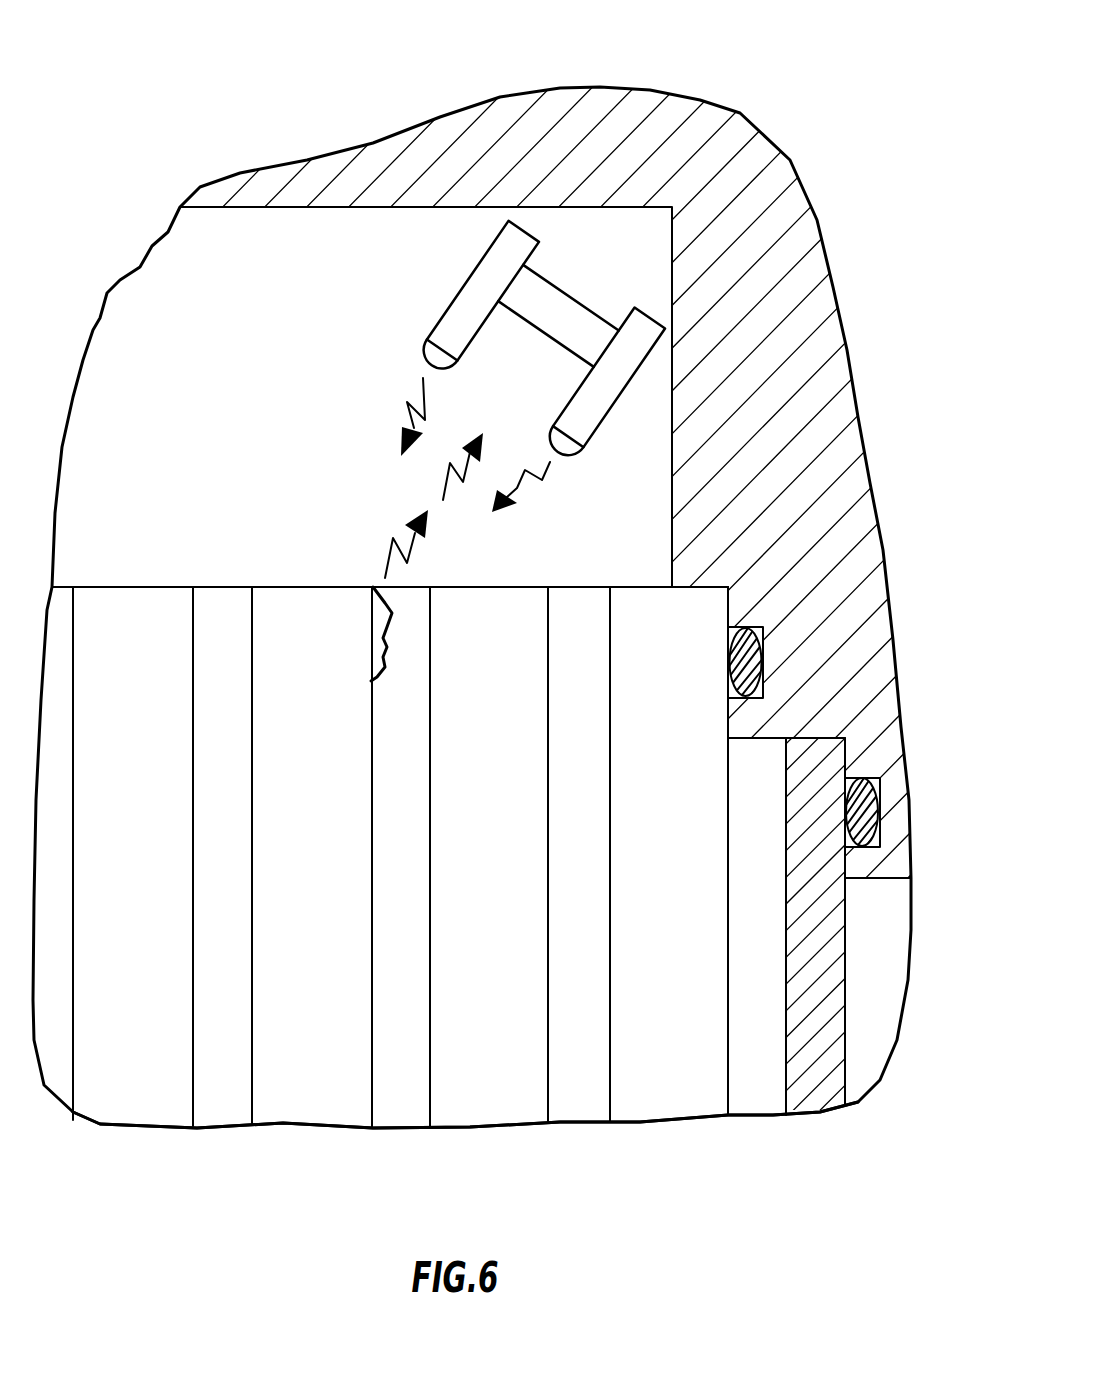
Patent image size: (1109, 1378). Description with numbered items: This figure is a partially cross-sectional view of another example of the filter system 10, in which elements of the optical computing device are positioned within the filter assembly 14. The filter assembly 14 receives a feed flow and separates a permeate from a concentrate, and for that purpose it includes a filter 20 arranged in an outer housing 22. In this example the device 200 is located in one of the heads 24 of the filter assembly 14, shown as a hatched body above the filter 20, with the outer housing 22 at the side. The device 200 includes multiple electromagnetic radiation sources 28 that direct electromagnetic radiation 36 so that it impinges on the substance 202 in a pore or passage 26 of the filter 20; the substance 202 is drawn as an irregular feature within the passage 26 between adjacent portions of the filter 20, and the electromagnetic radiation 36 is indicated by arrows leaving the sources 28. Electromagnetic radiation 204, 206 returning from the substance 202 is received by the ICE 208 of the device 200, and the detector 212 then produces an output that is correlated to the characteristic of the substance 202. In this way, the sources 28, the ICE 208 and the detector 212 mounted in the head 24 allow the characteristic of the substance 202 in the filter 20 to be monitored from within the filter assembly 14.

The filter system 10 is at (822, 65).
The filter assembly 14 is at (375, 1138).
The filter 20 is at (153, 587).
The outer housing 22 is at (847, 1073).
The head 24 is at (833, 285).
The pore or passage 26 is at (403, 1117).
The electromagnetic radiation sources 28 is at (455, 302).
The electromagnetic radiation 36 is at (402, 420).
The device 200 is at (514, 345).
The substance 202 is at (379, 676).
The electromagnetic radiation 204 is at (360, 505).
The electromagnetic radiation 206 is at (387, 547).
The ICE 208 is at (513, 403).
The detector 212 is at (570, 293).